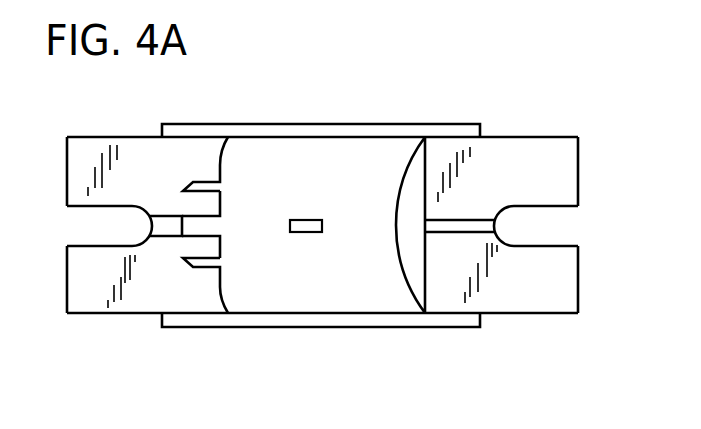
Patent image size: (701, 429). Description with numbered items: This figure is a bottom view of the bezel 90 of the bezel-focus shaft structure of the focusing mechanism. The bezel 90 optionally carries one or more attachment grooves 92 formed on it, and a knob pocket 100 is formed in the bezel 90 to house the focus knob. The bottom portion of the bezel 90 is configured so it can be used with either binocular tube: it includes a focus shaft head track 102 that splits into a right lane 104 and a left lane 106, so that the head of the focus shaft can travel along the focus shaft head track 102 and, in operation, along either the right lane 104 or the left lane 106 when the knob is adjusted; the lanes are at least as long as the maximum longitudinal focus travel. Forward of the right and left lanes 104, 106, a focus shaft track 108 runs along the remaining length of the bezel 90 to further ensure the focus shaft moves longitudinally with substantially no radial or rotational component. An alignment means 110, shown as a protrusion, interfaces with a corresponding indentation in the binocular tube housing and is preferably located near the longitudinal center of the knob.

The bezel 90 is at (92, 298).
The attachment groove 92 is at (92, 206).
The knob pocket 100 is at (350, 160).
The focus shaft head track 102 is at (162, 220).
The right lane 104 is at (199, 200).
The left lane 106 is at (205, 252).
The focus shaft track 108 is at (465, 222).
The alignment means 110 is at (308, 232).